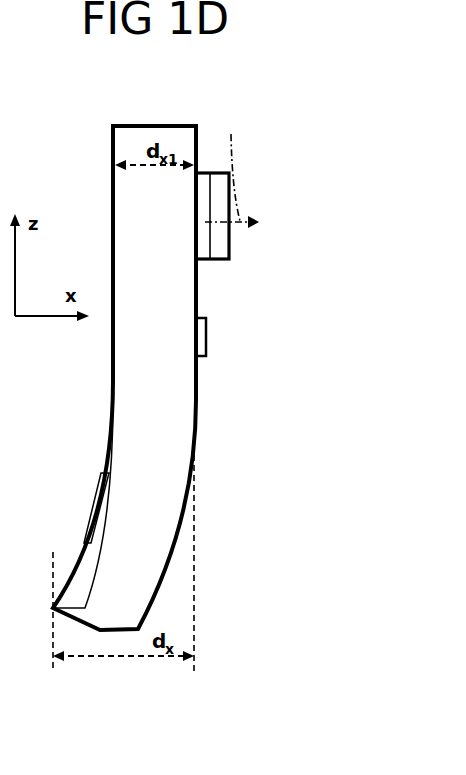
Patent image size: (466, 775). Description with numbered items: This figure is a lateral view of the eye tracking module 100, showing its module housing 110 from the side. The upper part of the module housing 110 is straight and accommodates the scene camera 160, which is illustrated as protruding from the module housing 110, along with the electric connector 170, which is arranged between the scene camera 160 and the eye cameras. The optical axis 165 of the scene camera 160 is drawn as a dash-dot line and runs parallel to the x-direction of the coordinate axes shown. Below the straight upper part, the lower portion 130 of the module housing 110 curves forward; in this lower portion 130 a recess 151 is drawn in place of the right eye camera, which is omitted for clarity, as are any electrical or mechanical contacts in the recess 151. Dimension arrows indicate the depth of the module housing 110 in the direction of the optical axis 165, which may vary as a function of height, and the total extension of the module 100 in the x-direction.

The eye tracking module 100 is at (121, 89).
The module housing 110 is at (96, 204).
The lower portion 130 is at (92, 427).
The recess 151 is at (76, 496).
The scene camera 160 is at (222, 284).
The optical axis 165 is at (230, 159).
The electric connector 170 is at (197, 340).